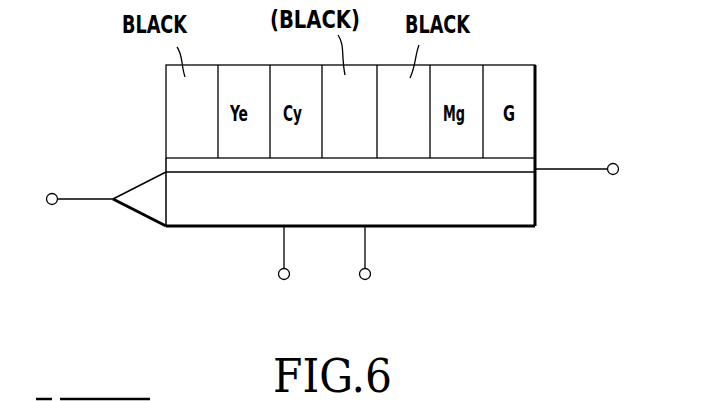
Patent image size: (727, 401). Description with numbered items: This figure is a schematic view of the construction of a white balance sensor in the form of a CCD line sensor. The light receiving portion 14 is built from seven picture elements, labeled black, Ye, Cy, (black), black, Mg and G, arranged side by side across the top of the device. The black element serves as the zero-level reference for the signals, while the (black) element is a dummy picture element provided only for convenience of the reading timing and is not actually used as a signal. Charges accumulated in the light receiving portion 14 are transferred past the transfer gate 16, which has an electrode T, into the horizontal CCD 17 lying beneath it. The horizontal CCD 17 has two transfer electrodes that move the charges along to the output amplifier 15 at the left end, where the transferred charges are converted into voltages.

The light receiving portion 14 is at (237, 67).
The output amplifier 15 is at (141, 188).
The transfer gate 16 is at (528, 165).
The horizontal CCD 17 is at (448, 216).